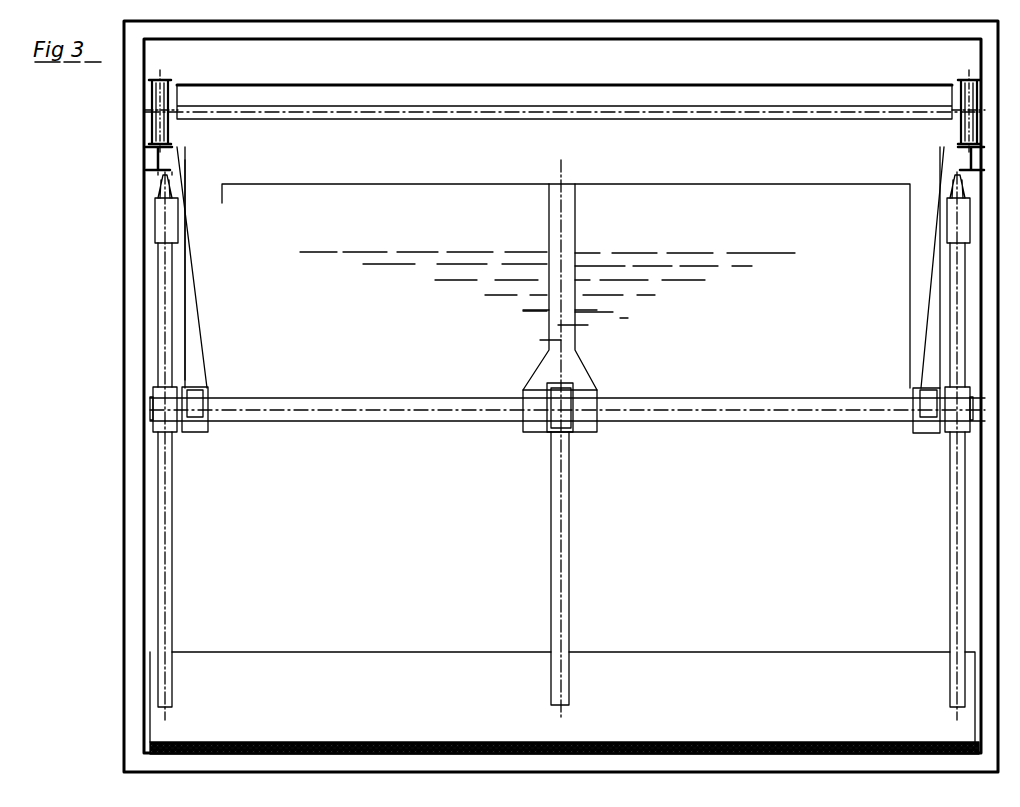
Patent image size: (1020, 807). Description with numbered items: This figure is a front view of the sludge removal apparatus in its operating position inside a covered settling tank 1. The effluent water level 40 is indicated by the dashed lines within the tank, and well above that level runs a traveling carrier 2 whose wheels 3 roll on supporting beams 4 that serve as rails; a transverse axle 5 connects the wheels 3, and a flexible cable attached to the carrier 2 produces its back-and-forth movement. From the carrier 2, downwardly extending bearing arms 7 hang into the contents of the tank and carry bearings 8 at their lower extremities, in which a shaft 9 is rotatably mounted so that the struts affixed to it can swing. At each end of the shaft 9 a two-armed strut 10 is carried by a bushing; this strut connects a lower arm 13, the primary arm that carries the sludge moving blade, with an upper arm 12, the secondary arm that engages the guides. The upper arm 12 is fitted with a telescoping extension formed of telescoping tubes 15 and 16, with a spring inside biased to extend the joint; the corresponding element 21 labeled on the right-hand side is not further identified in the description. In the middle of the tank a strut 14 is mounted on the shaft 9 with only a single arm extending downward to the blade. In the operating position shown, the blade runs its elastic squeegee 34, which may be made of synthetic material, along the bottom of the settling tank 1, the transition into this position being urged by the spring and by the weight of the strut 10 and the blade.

The settling tank 1 is at (765, 550).
The traveling carrier 2 is at (774, 168).
The wheels 3 is at (967, 130).
The supporting beams 4 is at (167, 162).
The transverse axle 5 is at (497, 112).
The bearing arms 7 is at (568, 342).
The bearings 8 is at (597, 390).
The shaft 9 is at (786, 412).
The two-armed strut 10 is at (177, 438).
The upper arm 12 is at (182, 317).
The lower arm 13 is at (168, 546).
The strut 14 is at (558, 563).
The telescoping tube 15 is at (168, 270).
The telescoping tube 16 is at (172, 218).
The cylinder 21 is at (957, 187).
The elastic squeegee 34 is at (806, 740).
The effluent water level 40 is at (597, 253).